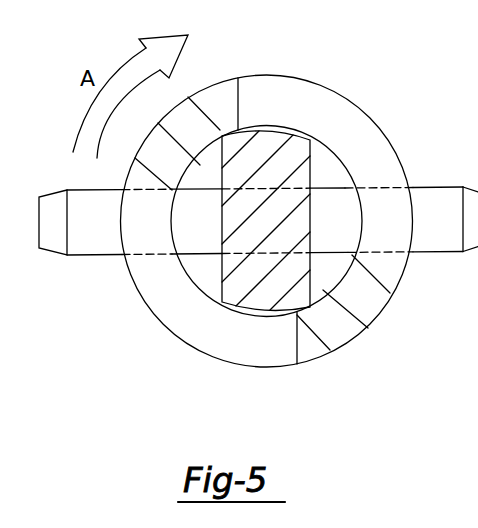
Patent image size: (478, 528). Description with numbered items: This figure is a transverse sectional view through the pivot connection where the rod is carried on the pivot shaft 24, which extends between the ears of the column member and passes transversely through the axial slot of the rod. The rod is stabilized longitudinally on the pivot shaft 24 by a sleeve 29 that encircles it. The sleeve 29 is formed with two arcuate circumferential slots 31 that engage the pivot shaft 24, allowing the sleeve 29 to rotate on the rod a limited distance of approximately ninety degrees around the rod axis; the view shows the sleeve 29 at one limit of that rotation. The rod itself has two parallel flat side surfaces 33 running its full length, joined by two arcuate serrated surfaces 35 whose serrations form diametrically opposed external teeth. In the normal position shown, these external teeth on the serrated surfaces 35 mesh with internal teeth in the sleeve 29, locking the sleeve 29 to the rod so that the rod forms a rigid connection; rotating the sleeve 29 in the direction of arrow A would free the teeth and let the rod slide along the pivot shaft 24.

The pivot shaft 24 is at (85, 248).
The sleeve 29 is at (176, 100).
The arcuate circumferential slots 31 is at (188, 330).
The flat side surfaces 33 is at (310, 172).
The arcuate serrated surfaces 35 is at (270, 131).